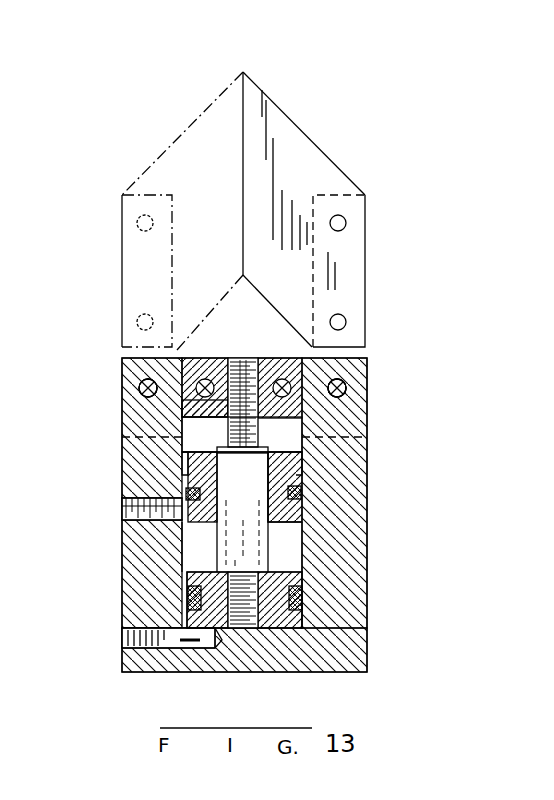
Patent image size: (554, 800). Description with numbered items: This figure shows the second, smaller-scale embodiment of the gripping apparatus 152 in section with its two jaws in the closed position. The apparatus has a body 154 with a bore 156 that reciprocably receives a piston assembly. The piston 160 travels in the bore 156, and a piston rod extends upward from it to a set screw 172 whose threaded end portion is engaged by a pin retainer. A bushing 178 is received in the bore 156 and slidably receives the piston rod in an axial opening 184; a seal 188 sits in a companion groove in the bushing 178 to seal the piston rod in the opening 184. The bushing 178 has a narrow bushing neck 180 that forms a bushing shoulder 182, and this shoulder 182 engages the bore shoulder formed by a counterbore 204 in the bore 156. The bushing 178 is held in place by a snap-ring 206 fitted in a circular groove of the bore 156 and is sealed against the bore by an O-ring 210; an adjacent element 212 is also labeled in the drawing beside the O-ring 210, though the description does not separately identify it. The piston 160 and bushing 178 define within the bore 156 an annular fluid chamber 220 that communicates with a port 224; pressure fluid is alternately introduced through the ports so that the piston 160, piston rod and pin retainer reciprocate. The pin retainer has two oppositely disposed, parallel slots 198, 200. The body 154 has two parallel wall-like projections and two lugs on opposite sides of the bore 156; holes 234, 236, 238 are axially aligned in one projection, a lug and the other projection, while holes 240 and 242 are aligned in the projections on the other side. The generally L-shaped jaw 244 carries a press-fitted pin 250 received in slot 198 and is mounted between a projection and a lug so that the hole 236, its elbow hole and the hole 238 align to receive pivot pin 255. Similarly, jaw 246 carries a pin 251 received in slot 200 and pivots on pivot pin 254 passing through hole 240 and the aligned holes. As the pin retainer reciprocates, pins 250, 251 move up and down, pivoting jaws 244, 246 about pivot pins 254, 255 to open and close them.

The gripping apparatus 152 is at (302, 90).
The jaw 246 is at (122, 258).
The jaw 244 is at (365, 270).
The slot 198 is at (186, 356).
The pin 251 is at (278, 360).
The pin 250 is at (206, 360).
The slot 200 is at (283, 360).
The set screw 172 is at (259, 364).
The snap-ring 206 is at (242, 434).
The hole 240 is at (140, 384).
The hole 242 is at (148, 388).
The pivot pin 254 is at (145, 396).
The hole 234 is at (364, 380).
The hole 236 is at (337, 388).
The hole 238 is at (337, 388).
The pivot pin 255 is at (366, 406).
The left guide block 212 is at (188, 495).
The O-ring 210 is at (186, 491).
The port 224 is at (135, 508).
The annular fluid chamber 220 is at (91, 493).
The counterbore 204 is at (303, 474).
The bushing 178 is at (303, 496).
The bushing shoulder 182 is at (303, 516).
The seal 188 is at (217, 462).
The opening 184 is at (218, 484).
The bushing neck 180 is at (366, 538).
The piston 160 is at (302, 574).
The bore 156 is at (303, 612).
The body 154 is at (366, 648).